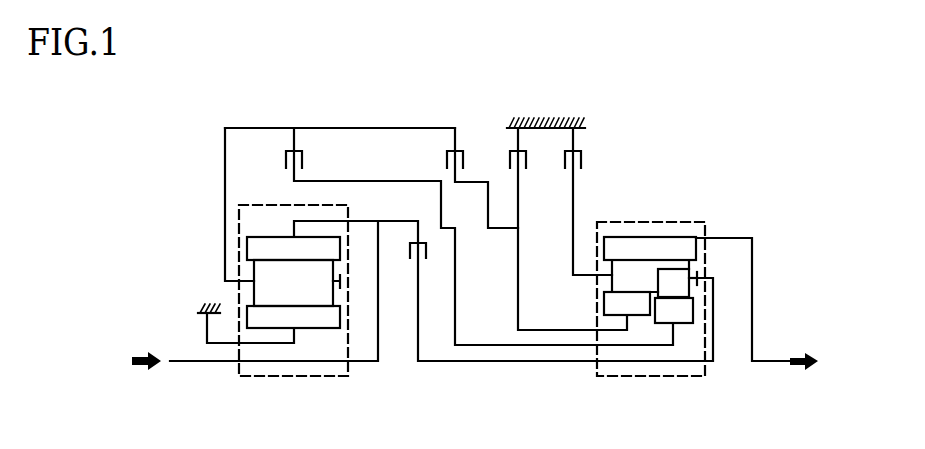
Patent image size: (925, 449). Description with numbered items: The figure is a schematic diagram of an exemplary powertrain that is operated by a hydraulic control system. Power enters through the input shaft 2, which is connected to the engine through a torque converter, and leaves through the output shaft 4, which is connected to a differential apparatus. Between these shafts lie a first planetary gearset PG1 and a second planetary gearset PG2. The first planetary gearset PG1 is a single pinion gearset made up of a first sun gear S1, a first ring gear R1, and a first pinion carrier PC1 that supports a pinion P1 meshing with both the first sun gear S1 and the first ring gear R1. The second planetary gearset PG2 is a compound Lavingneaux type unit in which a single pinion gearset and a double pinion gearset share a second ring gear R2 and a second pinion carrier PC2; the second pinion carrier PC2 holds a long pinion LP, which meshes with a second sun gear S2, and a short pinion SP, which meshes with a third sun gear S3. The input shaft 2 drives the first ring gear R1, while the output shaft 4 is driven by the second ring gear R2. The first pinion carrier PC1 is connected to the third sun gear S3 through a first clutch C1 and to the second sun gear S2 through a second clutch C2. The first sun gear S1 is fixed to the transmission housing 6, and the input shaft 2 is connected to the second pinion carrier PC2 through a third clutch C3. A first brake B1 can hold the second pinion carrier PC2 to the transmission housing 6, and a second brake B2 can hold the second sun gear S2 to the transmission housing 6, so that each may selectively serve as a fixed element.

The input shaft 2 is at (178, 359).
The output shaft 4 is at (752, 313).
The transmission housing 6 is at (550, 118).
The first planetary gearset PG1 is at (286, 377).
The second planetary gearset PG2 is at (655, 377).
The first pinion carrier PC1 is at (225, 255).
The second pinion carrier PC2 is at (699, 278).
The first ring gear R1 is at (293, 249).
The pinion P1 is at (297, 283).
The first sun gear S1 is at (269, 323).
The second ring gear R2 is at (650, 249).
The long pinion LP is at (650, 276).
The short pinion SP is at (673, 283).
The second sun gear S2 is at (627, 303).
The third sun gear S3 is at (674, 311).
The first clutch C1 is at (479, 236).
The second clutch C2 is at (482, 178).
The third clutch C3 is at (503, 291).
The first brake B1 is at (588, 201).
The second brake B2 is at (568, 229).